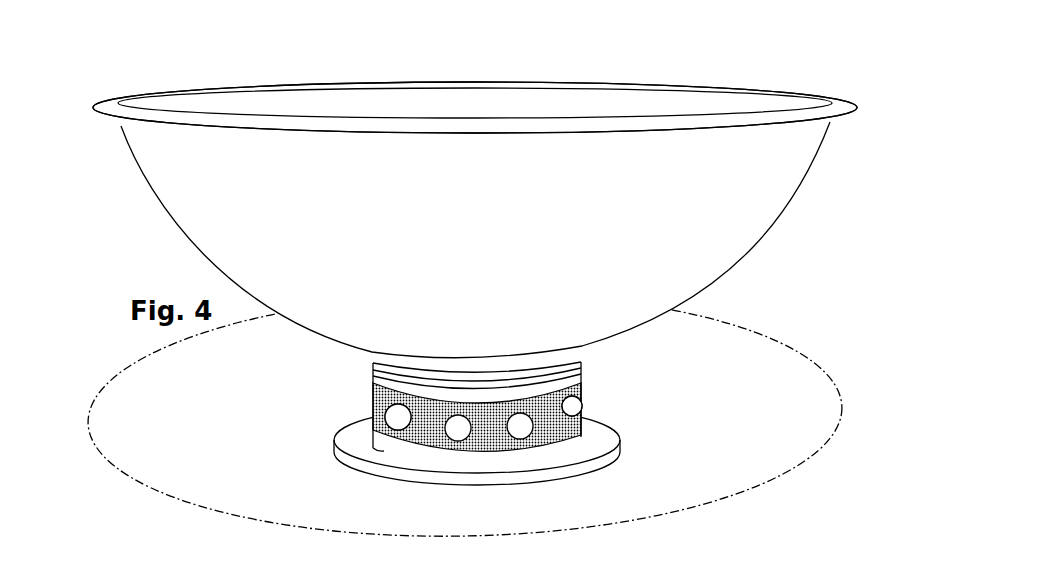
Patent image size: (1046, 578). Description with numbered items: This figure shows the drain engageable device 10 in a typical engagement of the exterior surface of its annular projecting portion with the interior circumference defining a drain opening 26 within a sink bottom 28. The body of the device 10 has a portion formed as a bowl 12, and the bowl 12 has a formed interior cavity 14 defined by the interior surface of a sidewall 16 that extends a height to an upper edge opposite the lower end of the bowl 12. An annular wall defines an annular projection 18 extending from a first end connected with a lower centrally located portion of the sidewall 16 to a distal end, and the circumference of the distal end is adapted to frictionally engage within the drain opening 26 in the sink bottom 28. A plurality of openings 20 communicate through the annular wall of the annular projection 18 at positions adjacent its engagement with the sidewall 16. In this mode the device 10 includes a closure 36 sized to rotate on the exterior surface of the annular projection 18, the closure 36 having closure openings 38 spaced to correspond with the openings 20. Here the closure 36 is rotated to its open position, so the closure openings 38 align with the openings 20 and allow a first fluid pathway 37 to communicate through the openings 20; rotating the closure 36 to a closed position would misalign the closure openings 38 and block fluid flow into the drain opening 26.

The drain engageable device 10 is at (690, 74).
The bowl 12 is at (121, 127).
The interior cavity 14 is at (266, 104).
The sidewall 16 is at (180, 185).
The annular projection 18 is at (373, 364).
The openings 20 is at (524, 428).
The drain opening 26 is at (582, 438).
The sink bottom 28 is at (728, 455).
The closure 36 is at (435, 420).
The first fluid pathway 37 is at (403, 415).
The closure openings 38 is at (577, 398).